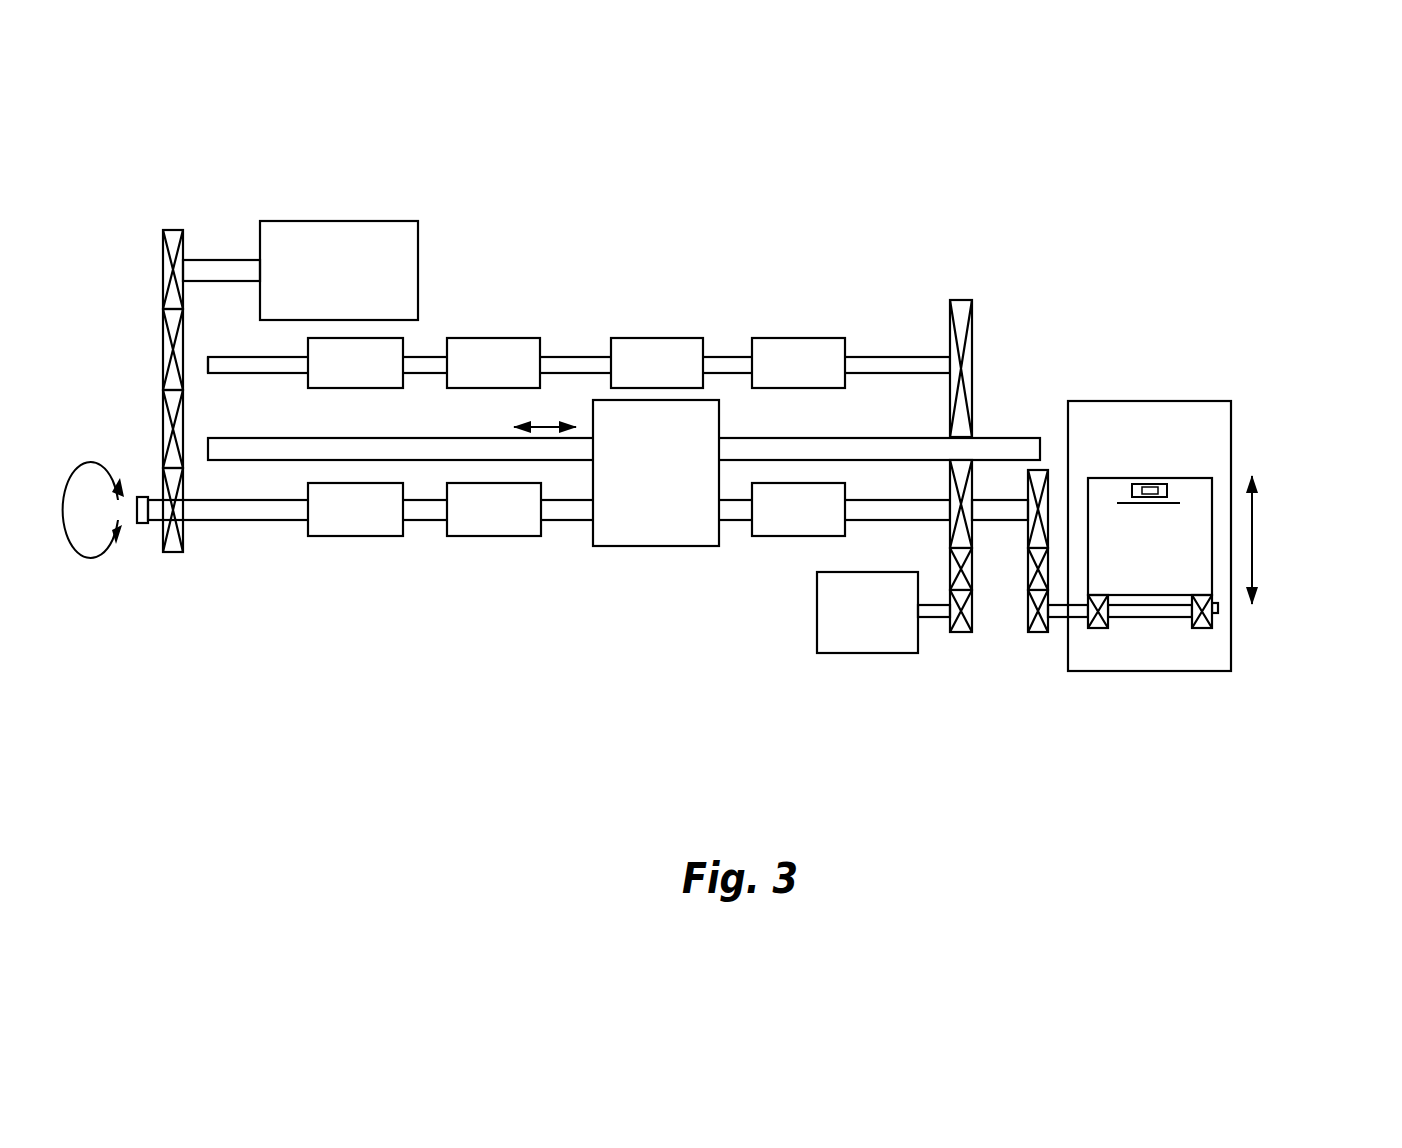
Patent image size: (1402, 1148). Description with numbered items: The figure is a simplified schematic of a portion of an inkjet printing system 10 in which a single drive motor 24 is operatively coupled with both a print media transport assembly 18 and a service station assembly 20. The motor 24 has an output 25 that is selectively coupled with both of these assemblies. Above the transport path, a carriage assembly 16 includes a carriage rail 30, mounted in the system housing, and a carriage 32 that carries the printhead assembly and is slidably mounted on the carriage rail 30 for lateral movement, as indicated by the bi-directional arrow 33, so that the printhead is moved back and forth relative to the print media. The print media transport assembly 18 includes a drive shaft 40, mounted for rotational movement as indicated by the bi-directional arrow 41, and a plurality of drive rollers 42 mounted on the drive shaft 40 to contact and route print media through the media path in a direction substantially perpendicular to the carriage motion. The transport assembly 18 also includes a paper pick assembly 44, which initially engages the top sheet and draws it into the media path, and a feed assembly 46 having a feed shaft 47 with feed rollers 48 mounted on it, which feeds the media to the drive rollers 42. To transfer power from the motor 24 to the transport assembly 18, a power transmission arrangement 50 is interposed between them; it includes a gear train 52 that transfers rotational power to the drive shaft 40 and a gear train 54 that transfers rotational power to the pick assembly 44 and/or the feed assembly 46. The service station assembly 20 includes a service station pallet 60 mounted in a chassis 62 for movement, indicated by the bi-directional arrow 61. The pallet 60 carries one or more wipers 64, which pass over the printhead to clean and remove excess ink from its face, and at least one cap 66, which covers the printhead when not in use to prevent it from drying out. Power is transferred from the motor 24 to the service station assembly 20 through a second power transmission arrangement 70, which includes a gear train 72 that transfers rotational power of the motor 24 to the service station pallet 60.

The inkjet printing system 10 is at (1019, 180).
The carriage assembly 16 is at (692, 232).
The print media transport assembly 18 is at (312, 619).
The service station assembly 20 is at (1036, 707).
The drive motor 24 is at (356, 240).
The output 25 is at (222, 268).
The carriage rail 30 is at (453, 447).
The carriage 32 is at (630, 528).
The bi-directional arrow 33 is at (543, 431).
The drive shaft 40 is at (262, 510).
The bi-directional arrow 41 is at (76, 472).
The drive rollers 42 is at (356, 521).
The pick assembly 44 is at (854, 669).
The feed assembly 46 is at (859, 285).
The feed shaft 47 is at (262, 366).
The feed rollers 48 is at (352, 378).
The power transmission arrangement 50 is at (151, 195).
The gear train 52 is at (190, 571).
The gear train 54 is at (997, 409).
The service station pallet 60 is at (1103, 486).
The bi-directional arrow 61 is at (1256, 494).
The chassis 62 is at (1218, 655).
The wipers 64 is at (1176, 502).
The cap 66 is at (1152, 484).
The power transmission arrangement 70 is at (949, 653).
The gear train 72 is at (1019, 638).